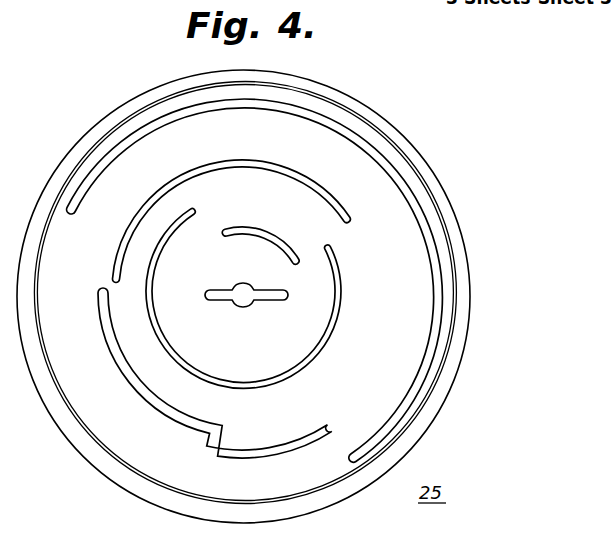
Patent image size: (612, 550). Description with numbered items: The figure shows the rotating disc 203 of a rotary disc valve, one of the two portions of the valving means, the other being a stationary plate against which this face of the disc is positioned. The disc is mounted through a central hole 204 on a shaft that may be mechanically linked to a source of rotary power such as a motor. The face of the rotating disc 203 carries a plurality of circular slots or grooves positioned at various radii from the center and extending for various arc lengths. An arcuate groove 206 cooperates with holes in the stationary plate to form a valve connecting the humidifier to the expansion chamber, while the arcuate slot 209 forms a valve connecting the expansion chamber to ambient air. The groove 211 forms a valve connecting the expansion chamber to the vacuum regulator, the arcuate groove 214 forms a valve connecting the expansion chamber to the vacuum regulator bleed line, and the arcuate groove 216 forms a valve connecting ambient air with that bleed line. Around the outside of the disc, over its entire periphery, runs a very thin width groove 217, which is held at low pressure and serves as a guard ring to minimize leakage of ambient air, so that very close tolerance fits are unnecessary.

The rotating disc 203 is at (447, 194).
The groove 217 is at (448, 248).
The arcuate groove 206 is at (430, 353).
The arcuate groove 216 is at (277, 167).
The arcuate groove 214 is at (342, 289).
The groove 211 is at (267, 235).
The central hole 204 is at (248, 273).
The arcuate slot 209 is at (289, 447).